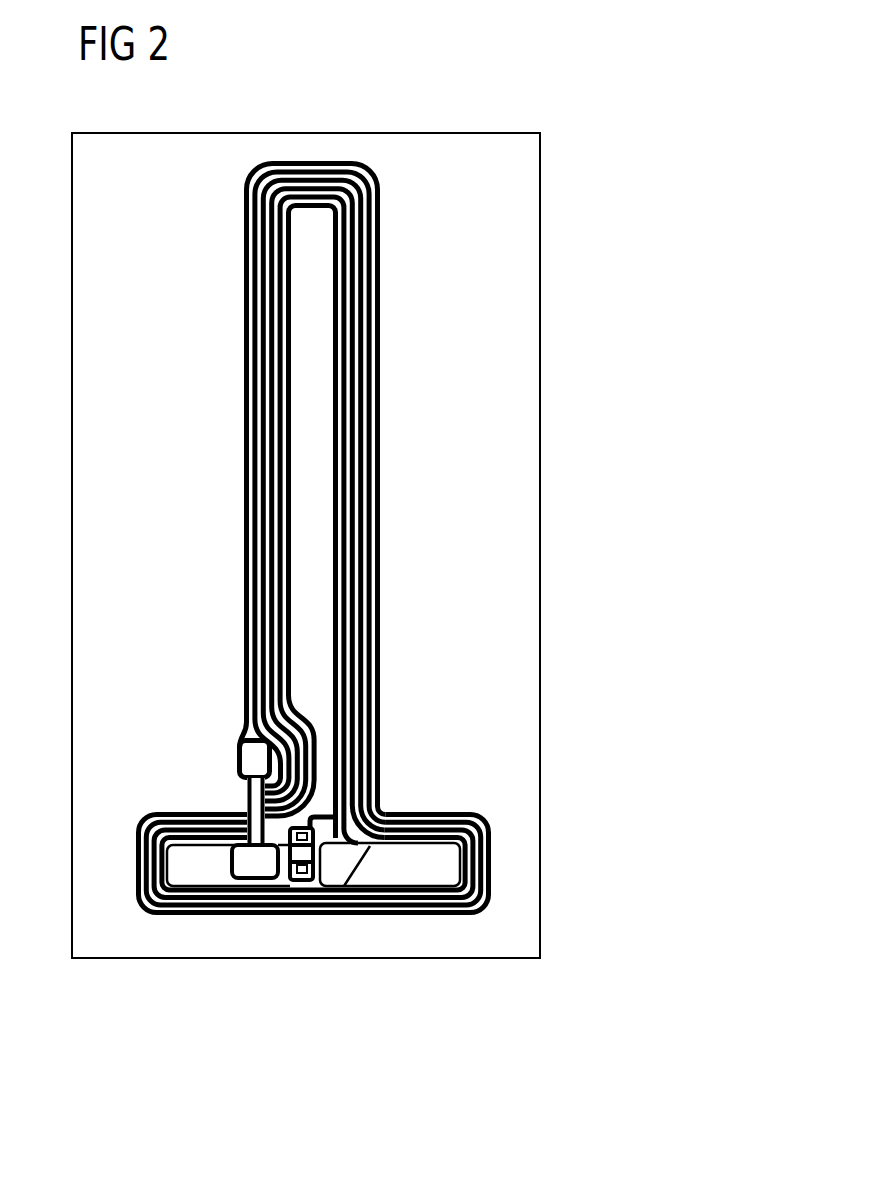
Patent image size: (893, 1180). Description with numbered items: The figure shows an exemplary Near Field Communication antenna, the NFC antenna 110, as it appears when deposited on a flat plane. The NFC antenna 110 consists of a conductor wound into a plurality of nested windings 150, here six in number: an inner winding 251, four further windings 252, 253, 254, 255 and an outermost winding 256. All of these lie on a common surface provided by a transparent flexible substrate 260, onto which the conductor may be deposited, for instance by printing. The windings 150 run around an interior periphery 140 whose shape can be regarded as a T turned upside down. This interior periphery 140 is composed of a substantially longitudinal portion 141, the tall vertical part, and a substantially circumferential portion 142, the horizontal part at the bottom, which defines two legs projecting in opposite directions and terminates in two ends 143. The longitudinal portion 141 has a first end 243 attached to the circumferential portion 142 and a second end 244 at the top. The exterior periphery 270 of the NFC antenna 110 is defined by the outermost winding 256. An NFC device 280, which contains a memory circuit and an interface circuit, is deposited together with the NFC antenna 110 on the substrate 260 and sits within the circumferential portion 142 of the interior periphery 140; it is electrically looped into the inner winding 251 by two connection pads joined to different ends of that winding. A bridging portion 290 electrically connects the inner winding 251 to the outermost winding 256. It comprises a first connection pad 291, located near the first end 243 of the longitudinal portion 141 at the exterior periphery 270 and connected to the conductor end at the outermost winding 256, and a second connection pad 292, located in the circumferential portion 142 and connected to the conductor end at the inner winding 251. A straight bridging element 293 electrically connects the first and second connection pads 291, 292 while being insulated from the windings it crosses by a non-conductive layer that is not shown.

The NFC antenna 110 is at (414, 342).
The interior periphery 140 is at (318, 561).
The longitudinal portion 141 is at (328, 685).
The circumferential portion 142 is at (378, 866).
The ends of the circumferential portion 143 is at (197, 866).
The windings 150 is at (150, 355).
The first end of the longitudinal portion 243 is at (330, 790).
The second end of the longitudinal portion 244 is at (330, 212).
The inner winding 251 is at (287, 526).
The further winding 252 is at (278, 494).
The further winding 253 is at (270, 463).
The further winding 254 is at (262, 431).
The further winding 255 is at (253, 399).
The outermost winding 256 is at (244, 369).
The substrate 260 is at (376, 133).
The exterior periphery 270 is at (224, 644).
The NFC device 280 is at (302, 878).
The bridging portion 290 is at (216, 777).
The first connection pad 291 is at (240, 752).
The second connection pad 292 is at (259, 868).
The bridging element 293 is at (250, 812).